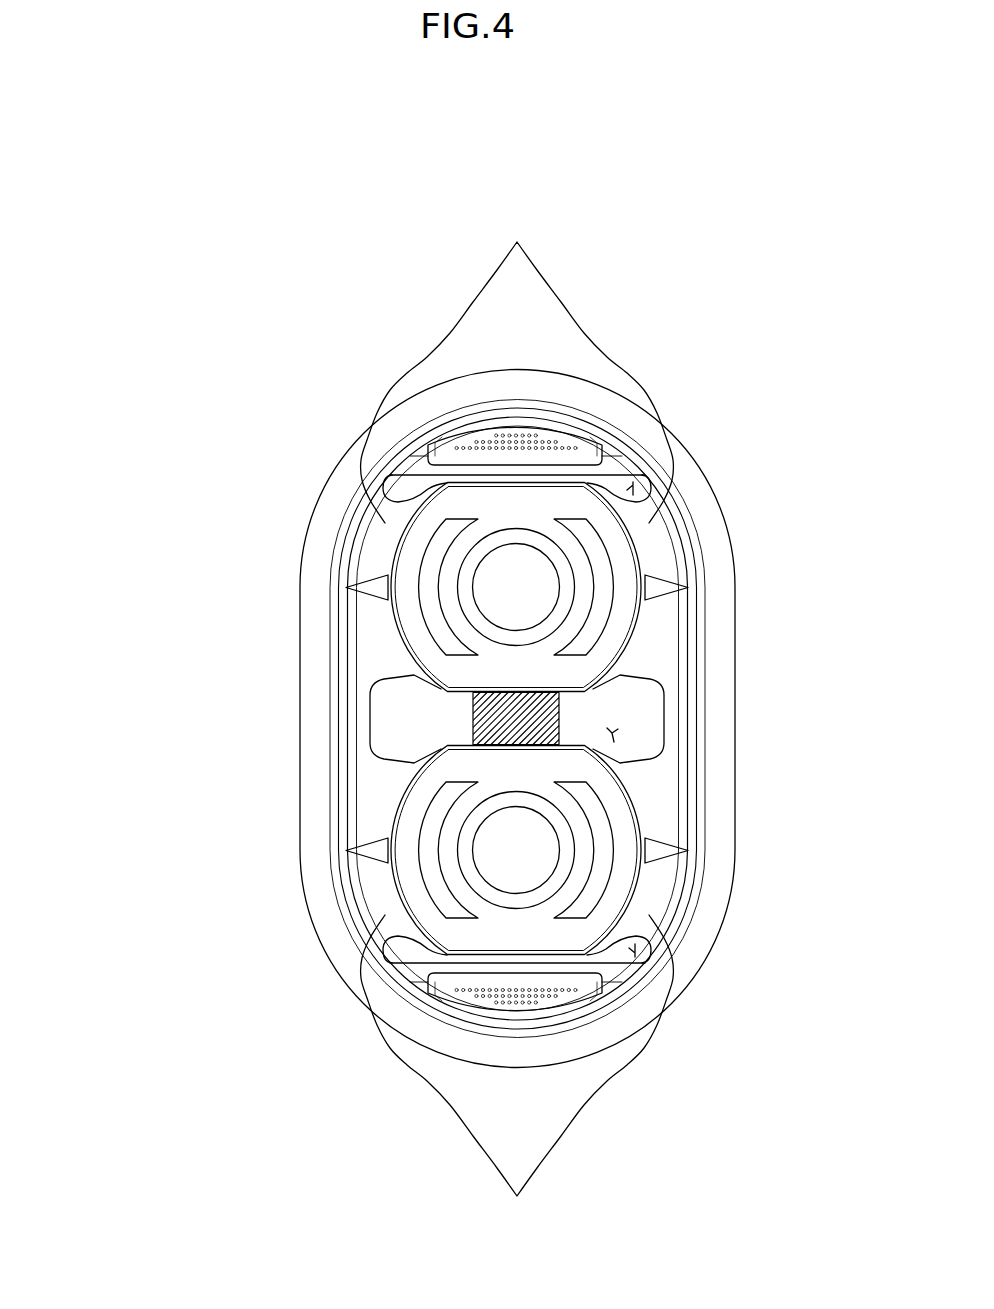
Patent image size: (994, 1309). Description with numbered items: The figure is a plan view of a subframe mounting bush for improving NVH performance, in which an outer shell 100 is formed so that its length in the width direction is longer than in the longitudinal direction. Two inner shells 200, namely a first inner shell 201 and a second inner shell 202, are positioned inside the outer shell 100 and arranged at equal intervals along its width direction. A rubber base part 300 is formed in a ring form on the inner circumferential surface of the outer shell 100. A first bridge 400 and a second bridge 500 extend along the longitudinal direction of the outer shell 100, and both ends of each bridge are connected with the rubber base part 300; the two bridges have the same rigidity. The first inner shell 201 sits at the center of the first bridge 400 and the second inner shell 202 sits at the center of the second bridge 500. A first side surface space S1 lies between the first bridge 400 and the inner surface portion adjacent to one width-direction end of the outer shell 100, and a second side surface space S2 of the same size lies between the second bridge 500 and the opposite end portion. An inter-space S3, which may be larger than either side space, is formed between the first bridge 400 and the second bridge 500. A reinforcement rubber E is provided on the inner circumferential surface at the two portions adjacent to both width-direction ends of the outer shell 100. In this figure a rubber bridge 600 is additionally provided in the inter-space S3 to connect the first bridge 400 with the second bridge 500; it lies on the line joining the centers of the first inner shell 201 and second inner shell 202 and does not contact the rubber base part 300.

The outer shell 100 is at (718, 615).
The inner shells 200 is at (128, 658).
The first inner shell 201 is at (410, 614).
The second inner shell 202 is at (410, 824).
The rubber base part 300 is at (660, 731).
The first bridge 400 is at (517, 368).
The second bridge 500 is at (517, 1073).
The rubber bridge 600 is at (548, 713).
The reinforcement rubber E is at (585, 442).
The first side surface space S1 is at (635, 484).
The second side surface space S2 is at (635, 954).
The inter-space S3 is at (609, 730).